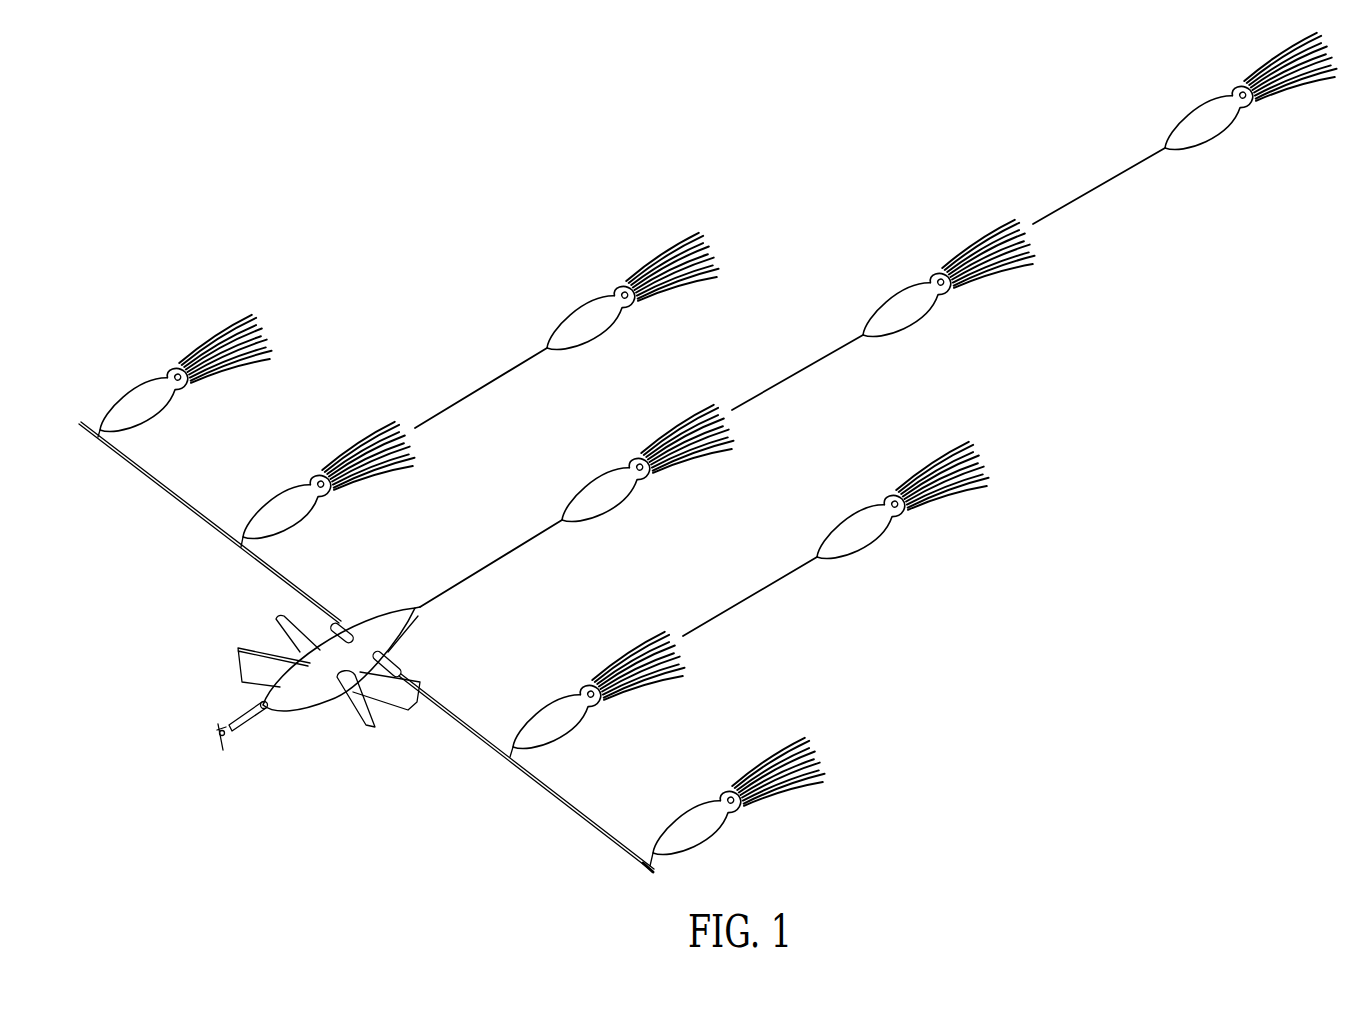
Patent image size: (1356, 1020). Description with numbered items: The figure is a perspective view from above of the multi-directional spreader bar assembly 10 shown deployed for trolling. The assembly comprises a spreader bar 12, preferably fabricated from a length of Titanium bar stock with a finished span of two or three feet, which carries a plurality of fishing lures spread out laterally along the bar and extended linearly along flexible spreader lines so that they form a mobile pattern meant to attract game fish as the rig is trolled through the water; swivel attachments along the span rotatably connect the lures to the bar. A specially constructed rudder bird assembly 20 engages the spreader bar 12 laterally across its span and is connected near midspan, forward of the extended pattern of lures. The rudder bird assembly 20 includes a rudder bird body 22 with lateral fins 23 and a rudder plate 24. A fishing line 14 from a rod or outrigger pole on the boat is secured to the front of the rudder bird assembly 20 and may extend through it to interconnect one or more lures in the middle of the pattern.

The multi-directional spreader bar assembly 10 is at (400, 215).
The spreader bar 12 is at (148, 482).
The fishing line 14 is at (221, 727).
The rudder bird assembly 20 is at (300, 701).
The rudder bird body 22 is at (268, 713).
The lateral fins 23 is at (372, 728).
The rudder plate 24 is at (238, 653).